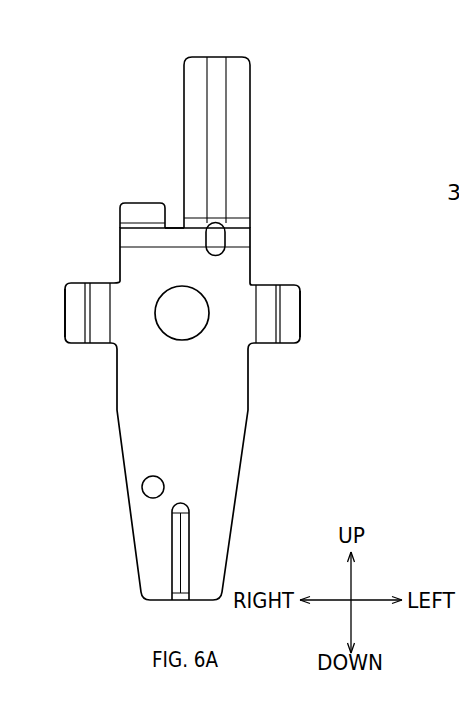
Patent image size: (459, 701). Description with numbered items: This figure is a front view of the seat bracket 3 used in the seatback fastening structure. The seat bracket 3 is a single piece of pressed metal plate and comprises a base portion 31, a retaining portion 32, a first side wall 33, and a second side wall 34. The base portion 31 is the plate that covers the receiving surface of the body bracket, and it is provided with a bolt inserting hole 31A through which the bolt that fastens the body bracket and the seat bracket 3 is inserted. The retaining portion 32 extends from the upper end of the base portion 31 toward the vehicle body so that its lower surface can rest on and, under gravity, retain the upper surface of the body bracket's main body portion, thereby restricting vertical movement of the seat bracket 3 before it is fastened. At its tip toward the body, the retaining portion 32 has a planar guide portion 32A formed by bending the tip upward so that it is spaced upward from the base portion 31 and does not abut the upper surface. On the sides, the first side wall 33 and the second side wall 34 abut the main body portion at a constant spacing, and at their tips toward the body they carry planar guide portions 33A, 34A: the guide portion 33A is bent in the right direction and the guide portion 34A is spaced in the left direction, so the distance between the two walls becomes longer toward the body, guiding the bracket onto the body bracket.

The seat bracket 3 is at (239, 322).
The base portion 31 is at (223, 280).
The bolt inserting hole 31A is at (193, 316).
The retaining portion 32 is at (172, 226).
The planar guide portion 32A is at (137, 212).
The first side wall 33 is at (83, 300).
The planar guide portion 33A is at (73, 318).
The second side wall 34 is at (280, 322).
The planar guide portion 34A is at (290, 307).